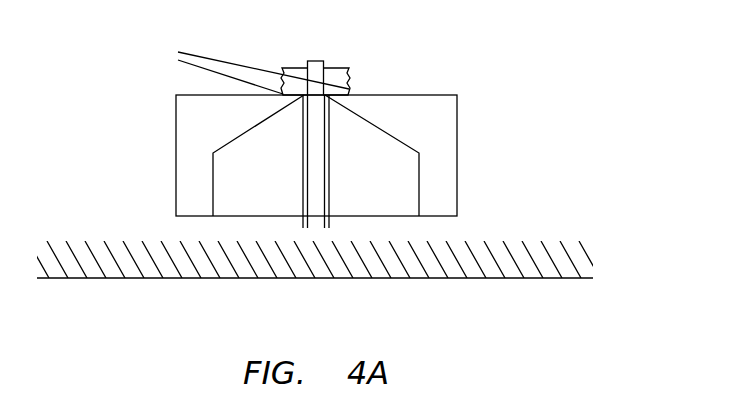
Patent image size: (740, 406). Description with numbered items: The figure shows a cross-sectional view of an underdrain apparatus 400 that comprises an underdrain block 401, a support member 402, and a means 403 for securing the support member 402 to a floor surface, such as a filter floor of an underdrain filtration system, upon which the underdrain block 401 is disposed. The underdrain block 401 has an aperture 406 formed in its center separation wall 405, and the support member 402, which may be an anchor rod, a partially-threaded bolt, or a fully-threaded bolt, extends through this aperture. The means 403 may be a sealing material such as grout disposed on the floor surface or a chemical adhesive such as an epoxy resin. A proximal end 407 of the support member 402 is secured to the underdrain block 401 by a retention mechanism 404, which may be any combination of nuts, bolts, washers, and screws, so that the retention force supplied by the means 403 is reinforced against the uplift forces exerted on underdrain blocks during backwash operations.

The underdrain apparatus 400 is at (558, 73).
The underdrain block 401 is at (403, 105).
The support member 402 is at (307, 66).
The means for securing the support member to a floor surface 403 is at (498, 250).
The retention mechanism 404 is at (171, 61).
The center separation wall 405 is at (330, 182).
The aperture 406 is at (328, 92).
The proximal end 407 is at (315, 60).